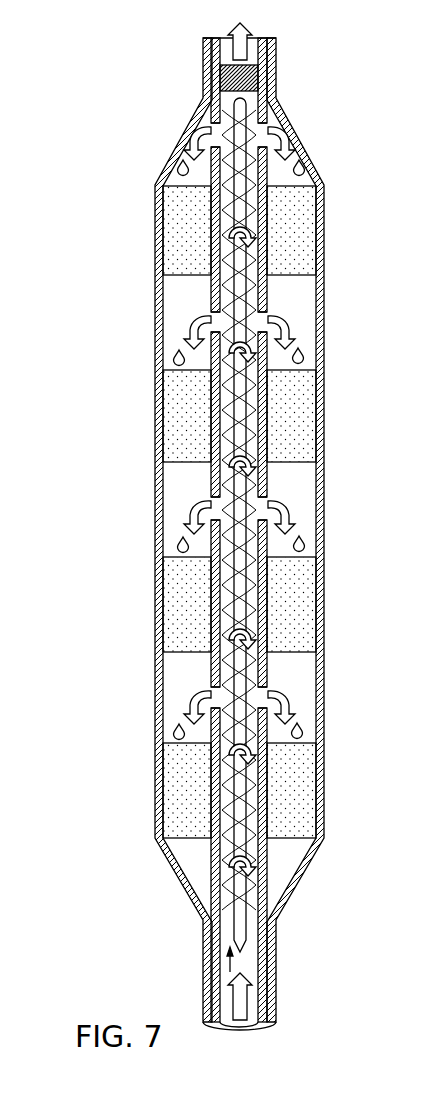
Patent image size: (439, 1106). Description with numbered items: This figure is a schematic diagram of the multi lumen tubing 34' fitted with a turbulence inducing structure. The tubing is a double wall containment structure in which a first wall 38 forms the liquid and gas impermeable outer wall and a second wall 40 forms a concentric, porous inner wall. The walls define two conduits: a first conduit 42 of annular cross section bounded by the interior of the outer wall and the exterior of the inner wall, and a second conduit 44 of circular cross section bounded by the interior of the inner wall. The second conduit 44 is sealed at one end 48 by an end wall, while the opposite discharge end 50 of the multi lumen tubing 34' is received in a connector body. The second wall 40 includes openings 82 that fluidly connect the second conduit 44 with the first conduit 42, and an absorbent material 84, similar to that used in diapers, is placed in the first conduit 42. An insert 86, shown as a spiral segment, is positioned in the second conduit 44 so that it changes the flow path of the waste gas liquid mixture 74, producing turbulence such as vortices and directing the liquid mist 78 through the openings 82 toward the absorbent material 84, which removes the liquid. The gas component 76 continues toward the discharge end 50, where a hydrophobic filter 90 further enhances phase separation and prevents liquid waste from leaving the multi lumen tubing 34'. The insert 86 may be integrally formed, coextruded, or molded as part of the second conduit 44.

The multi lumen tubing 34' is at (229, 553).
The first wall 38 is at (325, 241).
The second wall 40 is at (212, 313).
The first conduit 42 is at (193, 858).
The second conduit 44 is at (215, 980).
The end of the second conduit 48 is at (300, 1012).
The discharge end 50 is at (178, 47).
The waste gas liquid mixture 74 is at (213, 126).
The gas component 76 is at (252, 52).
The liquid mist 78 is at (177, 543).
The openings 82 is at (200, 312).
The absorbent material 84 is at (178, 405).
The insert 86 is at (215, 668).
The hydrophobic filter 90 is at (262, 122).